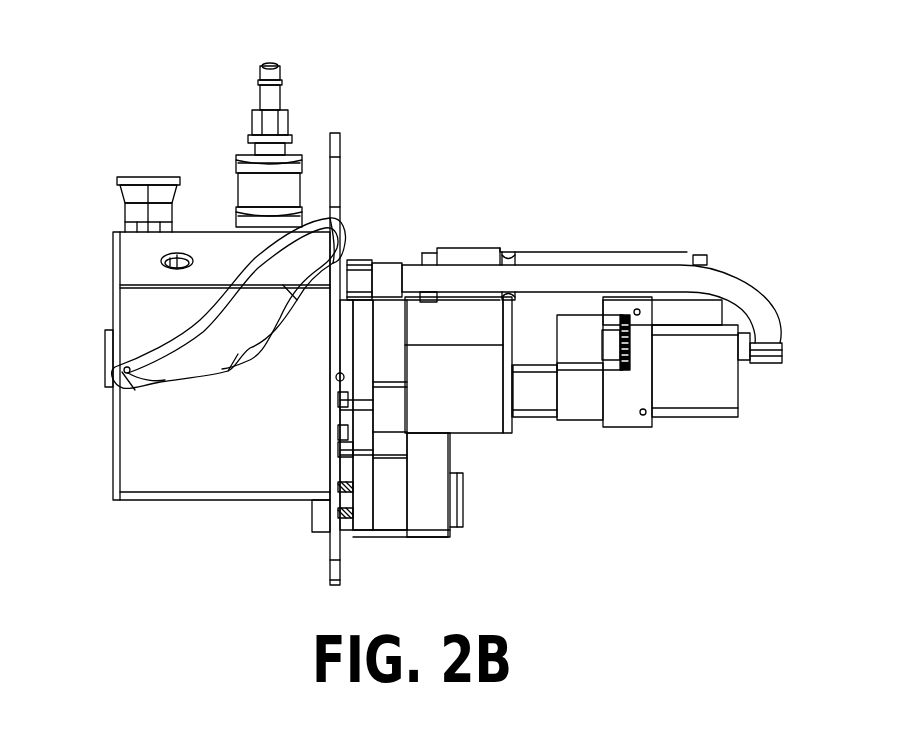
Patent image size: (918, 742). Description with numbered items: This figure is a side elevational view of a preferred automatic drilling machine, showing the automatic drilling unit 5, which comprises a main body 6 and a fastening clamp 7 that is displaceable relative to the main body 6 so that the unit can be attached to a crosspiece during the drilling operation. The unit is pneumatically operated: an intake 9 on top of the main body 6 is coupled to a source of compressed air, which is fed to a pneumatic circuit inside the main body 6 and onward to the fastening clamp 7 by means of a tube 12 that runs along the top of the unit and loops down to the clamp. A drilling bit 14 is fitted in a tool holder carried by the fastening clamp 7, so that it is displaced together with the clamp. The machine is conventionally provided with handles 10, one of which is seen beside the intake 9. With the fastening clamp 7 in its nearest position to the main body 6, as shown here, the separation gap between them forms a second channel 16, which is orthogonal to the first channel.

The automatic drilling unit 5 is at (585, 200).
The main body 6 is at (208, 455).
The fastening clamp 7 is at (448, 336).
The intake 9 is at (268, 107).
The handles 10 is at (157, 190).
The tube 12 is at (733, 277).
The drilling bit 14 is at (343, 517).
The second channel 16 is at (347, 470).